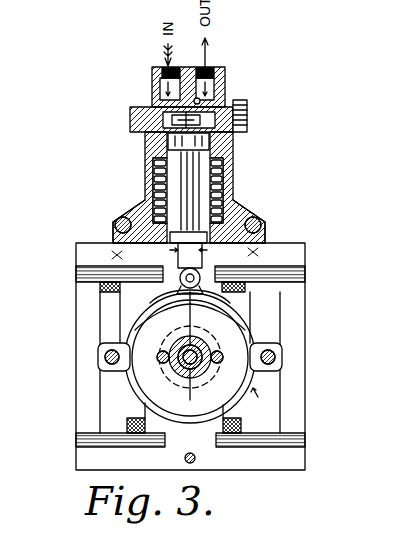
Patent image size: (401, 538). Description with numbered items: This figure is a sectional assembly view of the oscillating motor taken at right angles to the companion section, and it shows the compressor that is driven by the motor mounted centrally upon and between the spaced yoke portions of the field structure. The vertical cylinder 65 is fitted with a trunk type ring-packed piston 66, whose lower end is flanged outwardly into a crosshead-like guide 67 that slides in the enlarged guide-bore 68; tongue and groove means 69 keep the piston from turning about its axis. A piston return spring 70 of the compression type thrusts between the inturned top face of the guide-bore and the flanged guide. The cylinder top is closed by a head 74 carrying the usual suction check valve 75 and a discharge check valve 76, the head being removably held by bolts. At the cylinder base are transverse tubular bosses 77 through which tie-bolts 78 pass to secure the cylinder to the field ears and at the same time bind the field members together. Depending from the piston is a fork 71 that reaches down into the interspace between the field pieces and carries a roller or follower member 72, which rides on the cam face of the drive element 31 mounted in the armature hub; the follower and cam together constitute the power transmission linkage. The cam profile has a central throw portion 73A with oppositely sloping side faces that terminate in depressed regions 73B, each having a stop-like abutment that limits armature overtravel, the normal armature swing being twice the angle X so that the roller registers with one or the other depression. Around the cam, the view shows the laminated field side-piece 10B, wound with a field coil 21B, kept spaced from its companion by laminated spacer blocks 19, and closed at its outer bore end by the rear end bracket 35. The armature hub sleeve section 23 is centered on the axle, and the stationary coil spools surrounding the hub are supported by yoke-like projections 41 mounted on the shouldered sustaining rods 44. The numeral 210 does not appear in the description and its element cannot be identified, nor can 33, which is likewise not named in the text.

The head 74 is at (213, 94).
The discharge check valve 76 is at (212, 100).
The suction check valve 75 is at (177, 117).
The piston 66 is at (130, 125).
The vertical cylinder 65 is at (147, 145).
The crosshead-like guide 67 is at (143, 212).
The tubular bosses 77 is at (117, 218).
The tie-bolts 78 is at (263, 222).
The piston return spring 70 is at (220, 163).
The guide-bore 68 is at (228, 190).
The tongue and groove means 69 is at (237, 215).
The field side-piece 10B is at (293, 257).
The mounting block 210 is at (248, 288).
The fork 71 is at (183, 352).
The follower member 72 is at (172, 308).
The central throw portion 73A is at (167, 293).
The depressed region 73B is at (143, 318).
The yoke-like projections 41 is at (120, 364).
The drive element 31 is at (148, 380).
The spacer blocks 19 is at (80, 438).
The hub sleeve section 23 is at (200, 332).
The sustaining rods 44 is at (282, 357).
The hub bolt 33 is at (223, 355).
The rear end bracket 35 is at (262, 402).
The field coil 21B is at (243, 424).